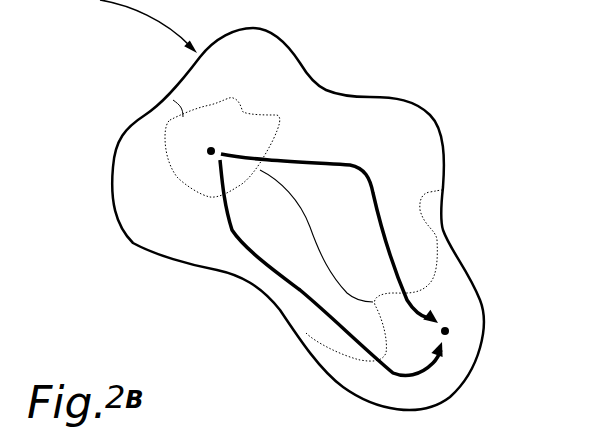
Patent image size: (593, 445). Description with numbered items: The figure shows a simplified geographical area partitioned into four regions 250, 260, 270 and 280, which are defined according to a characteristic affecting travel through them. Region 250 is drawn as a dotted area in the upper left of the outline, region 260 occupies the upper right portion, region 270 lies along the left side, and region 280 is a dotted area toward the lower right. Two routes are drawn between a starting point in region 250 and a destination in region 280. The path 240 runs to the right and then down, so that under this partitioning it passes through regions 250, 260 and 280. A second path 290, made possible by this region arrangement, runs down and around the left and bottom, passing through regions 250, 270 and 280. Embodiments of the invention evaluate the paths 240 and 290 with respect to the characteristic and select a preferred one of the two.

The path 240 is at (370, 193).
The region 250 is at (262, 138).
The region 260 is at (375, 115).
The region 270 is at (133, 175).
The region 280 is at (446, 284).
The second path 290 is at (227, 219).